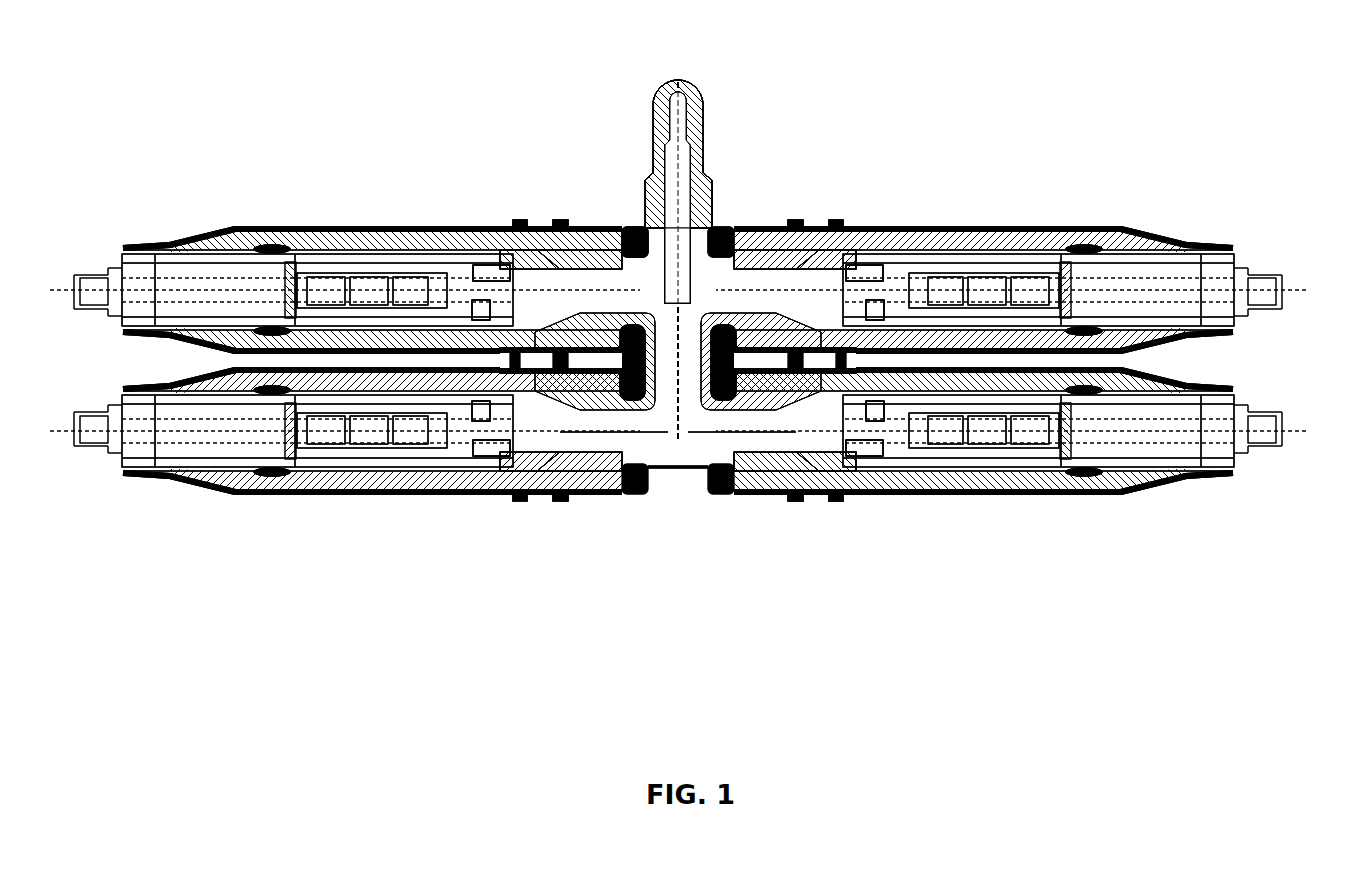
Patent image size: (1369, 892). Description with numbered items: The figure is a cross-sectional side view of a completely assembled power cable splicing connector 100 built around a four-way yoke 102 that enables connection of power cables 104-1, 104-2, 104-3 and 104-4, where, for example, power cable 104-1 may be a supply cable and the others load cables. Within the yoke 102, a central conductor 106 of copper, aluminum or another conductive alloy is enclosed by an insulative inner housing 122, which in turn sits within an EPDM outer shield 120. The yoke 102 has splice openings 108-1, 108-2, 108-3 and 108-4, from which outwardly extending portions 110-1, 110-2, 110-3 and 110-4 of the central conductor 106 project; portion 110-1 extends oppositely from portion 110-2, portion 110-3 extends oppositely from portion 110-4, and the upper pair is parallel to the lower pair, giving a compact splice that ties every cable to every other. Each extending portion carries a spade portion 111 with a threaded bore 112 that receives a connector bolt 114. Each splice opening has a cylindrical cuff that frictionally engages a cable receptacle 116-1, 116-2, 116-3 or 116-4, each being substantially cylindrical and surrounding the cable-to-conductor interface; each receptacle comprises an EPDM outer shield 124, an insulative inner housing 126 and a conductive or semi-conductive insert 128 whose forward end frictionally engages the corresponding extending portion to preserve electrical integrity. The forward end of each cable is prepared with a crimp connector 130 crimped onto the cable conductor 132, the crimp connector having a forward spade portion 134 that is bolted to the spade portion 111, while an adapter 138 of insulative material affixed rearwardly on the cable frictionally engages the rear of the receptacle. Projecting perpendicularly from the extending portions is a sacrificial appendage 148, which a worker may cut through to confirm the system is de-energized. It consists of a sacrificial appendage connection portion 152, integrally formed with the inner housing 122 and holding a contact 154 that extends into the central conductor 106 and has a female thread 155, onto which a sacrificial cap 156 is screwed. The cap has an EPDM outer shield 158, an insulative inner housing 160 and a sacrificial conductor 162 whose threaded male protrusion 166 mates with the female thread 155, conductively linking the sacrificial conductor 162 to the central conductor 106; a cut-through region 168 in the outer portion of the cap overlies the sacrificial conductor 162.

The power cable splicing connector 100 is at (862, 120).
The four-way yoke 102 is at (740, 272).
The power cable 104-1 is at (65, 297).
The power cable 104-2 is at (1297, 295).
The power cable 104-3 is at (75, 450).
The power cable 104-4 is at (1305, 447).
The central conductor 106 is at (670, 477).
The splice opening 108-1 is at (600, 268).
The splice opening 108-2 is at (770, 268).
The splice opening 108-3 is at (603, 467).
The splice opening 108-4 is at (757, 470).
The outwardly extending portion 110-1 is at (567, 293).
The outwardly extending portion 110-2 is at (822, 292).
The outwardly extending portion 110-3 is at (557, 453).
The outwardly extending portion 110-4 is at (822, 440).
The spade portion 111 is at (510, 292).
The threaded bore 112 is at (477, 322).
The connector bolt 114 is at (497, 305).
The cable receptacle 116-1 is at (325, 220).
The cable receptacle 116-2 is at (1065, 215).
The cable receptacle 116-3 is at (332, 510).
The cable receptacle 116-4 is at (1020, 508).
The outer shield 120 is at (657, 440).
The insulative inner housing 122 is at (637, 268).
The outer shield 124 is at (1120, 228).
The insulative inner housing 126 is at (343, 237).
The insert 128 is at (410, 250).
The crimp connector 130 is at (405, 298).
The cable conductor 132 is at (290, 290).
The forward spade portion 134 is at (510, 298).
The adapter 138 is at (213, 270).
The sacrificial appendage 148 is at (722, 52).
The sacrificial appendage connection portion 152 is at (660, 230).
The contact 154 is at (680, 280).
The female thread 155 is at (680, 220).
The sacrificial cap 156 is at (656, 85).
The outer shield 158 is at (700, 150).
The insulative inner housing 160 is at (663, 153).
The sacrificial conductor 162 is at (672, 130).
The threaded male protrusion 166 is at (680, 197).
The cut-through region 168 is at (700, 117).